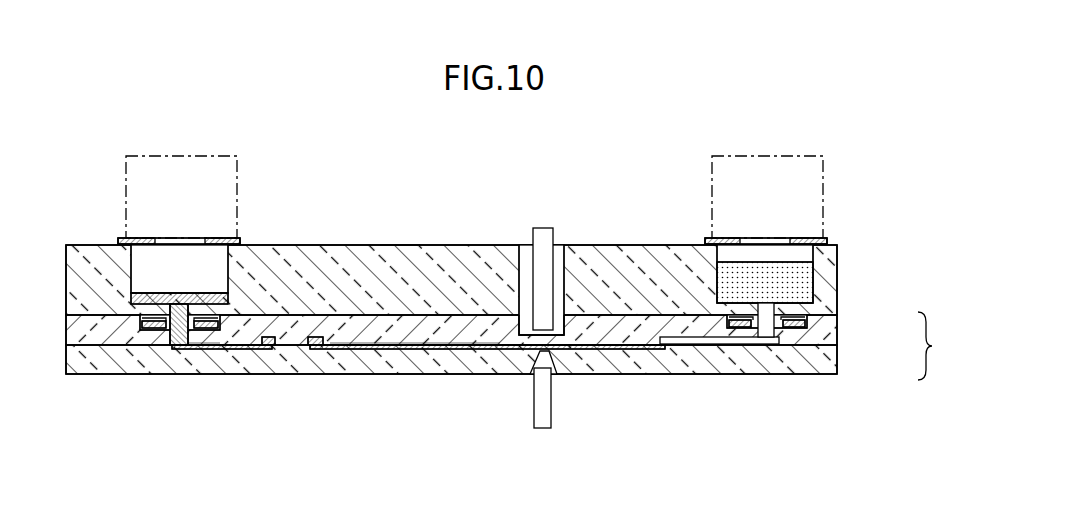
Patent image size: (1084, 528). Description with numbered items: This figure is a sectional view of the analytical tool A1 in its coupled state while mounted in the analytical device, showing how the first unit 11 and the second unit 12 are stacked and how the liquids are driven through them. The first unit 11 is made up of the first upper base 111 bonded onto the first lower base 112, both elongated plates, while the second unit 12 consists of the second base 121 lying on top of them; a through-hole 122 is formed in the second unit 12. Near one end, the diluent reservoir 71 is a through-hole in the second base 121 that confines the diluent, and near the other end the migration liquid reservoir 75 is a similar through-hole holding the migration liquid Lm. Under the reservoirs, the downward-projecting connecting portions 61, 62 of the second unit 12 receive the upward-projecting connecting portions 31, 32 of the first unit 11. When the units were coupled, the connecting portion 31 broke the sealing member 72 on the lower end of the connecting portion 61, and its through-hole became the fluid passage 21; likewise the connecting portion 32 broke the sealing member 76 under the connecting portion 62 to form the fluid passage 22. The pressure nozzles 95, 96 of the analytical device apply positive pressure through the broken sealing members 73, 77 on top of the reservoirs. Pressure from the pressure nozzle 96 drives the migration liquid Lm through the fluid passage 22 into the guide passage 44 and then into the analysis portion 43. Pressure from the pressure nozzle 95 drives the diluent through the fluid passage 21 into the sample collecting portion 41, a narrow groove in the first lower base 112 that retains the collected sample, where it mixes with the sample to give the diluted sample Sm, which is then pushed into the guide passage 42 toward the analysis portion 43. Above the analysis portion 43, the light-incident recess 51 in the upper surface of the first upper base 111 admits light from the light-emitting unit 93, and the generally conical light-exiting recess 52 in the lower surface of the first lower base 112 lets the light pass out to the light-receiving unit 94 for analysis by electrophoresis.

The analytical tool A1 is at (100, 158).
The first unit 11 is at (513, 347).
The first upper base 111 is at (830, 333).
The first lower base 112 is at (830, 357).
The second unit 12 is at (341, 243).
The second base 121 is at (398, 268).
The through-hole 122 is at (522, 266).
The light-emitting unit 93 is at (545, 238).
The light-receiving unit 94 is at (542, 417).
The light-incident recess 51 is at (560, 330).
The light-exiting recess 52 is at (548, 353).
The pressure nozzle 95 is at (237, 156).
The pressure nozzle 96 is at (823, 156).
The diluent reservoir 71 is at (228, 270).
The sealing member 73 is at (140, 240).
The migration liquid reservoir 75 is at (810, 245).
The sealing member 77 is at (727, 240).
The sealing member 72 is at (152, 333).
The sealing member 76 is at (740, 327).
The fluid passage 21 is at (180, 343).
The fluid passage 22 is at (765, 332).
The connecting portion 31 is at (167, 327).
The connecting portion 32 is at (788, 322).
The connecting portion 61 is at (205, 332).
The connecting portion 62 is at (805, 333).
The sample collecting portion 41 is at (232, 348).
The guide passage 42 is at (315, 345).
The analysis portion 43 is at (463, 348).
The guide passage 44 is at (693, 340).
The diluted sample Sm is at (212, 343).
The migration liquid Lm is at (423, 346).